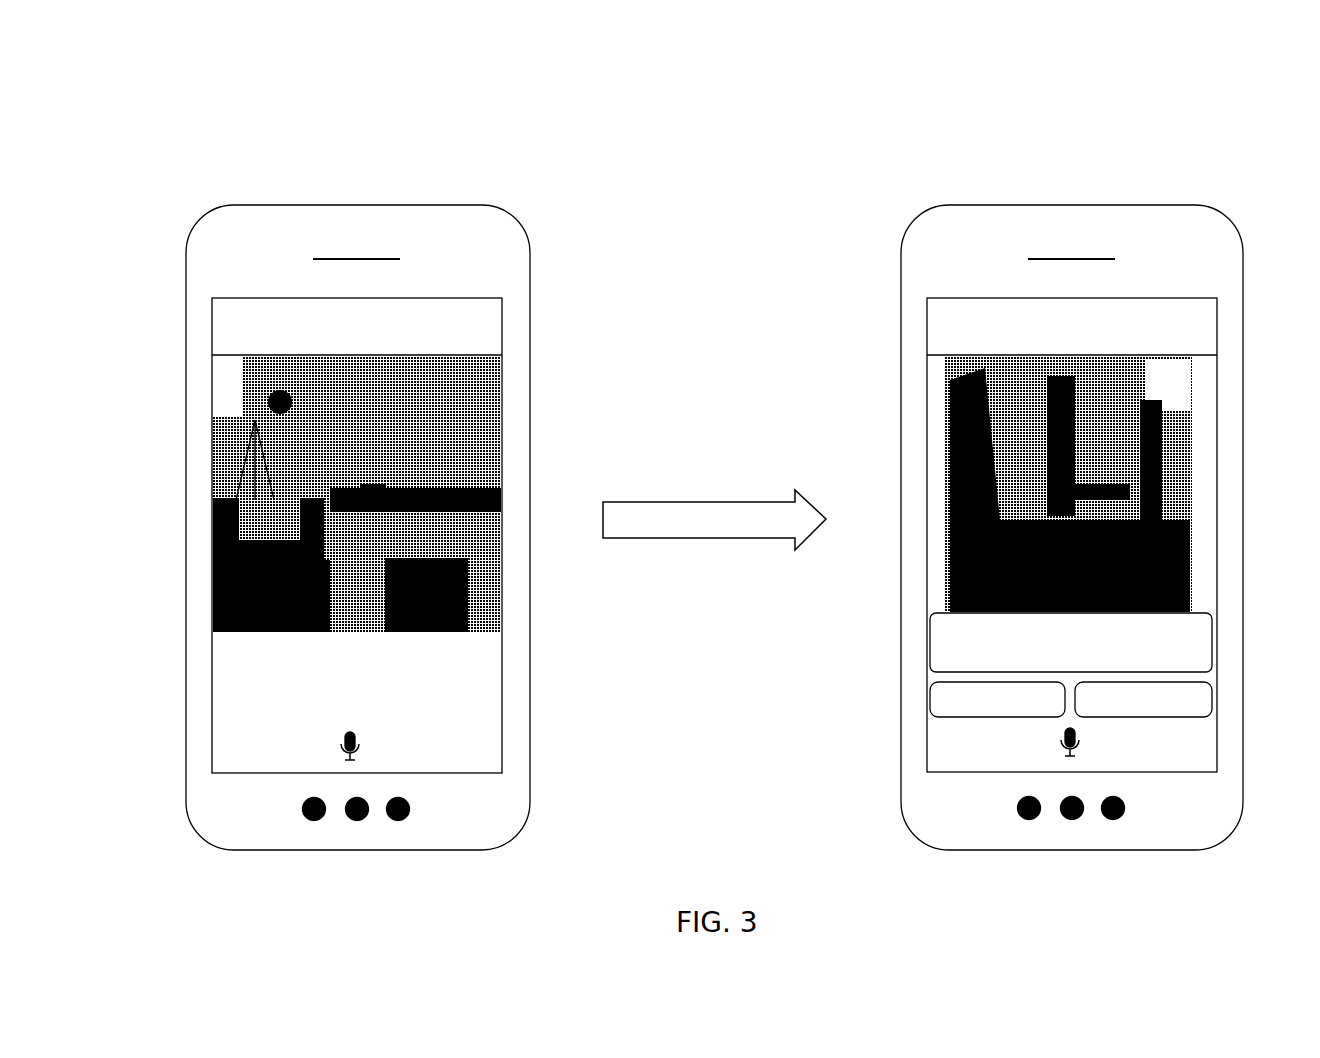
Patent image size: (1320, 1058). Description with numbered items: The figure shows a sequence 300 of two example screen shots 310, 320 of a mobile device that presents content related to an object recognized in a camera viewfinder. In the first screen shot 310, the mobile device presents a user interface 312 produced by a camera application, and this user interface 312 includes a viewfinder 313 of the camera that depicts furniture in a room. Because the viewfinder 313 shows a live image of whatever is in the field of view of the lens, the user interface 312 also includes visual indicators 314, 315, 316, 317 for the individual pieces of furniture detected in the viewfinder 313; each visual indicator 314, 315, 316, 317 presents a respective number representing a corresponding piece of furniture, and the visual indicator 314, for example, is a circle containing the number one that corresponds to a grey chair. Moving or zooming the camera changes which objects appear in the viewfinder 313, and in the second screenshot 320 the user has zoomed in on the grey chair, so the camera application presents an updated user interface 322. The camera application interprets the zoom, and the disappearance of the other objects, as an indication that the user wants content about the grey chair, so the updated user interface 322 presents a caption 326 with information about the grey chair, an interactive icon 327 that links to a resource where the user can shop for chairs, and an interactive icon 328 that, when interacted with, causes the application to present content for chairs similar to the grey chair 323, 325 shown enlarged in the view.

The user interface transition 300 is at (122, 74).
The first screen shot 310 is at (190, 197).
The user interface 312 is at (225, 335).
The viewfinder 313 is at (224, 445).
The visual indicator 314 is at (213, 497).
The visual indicator 315 is at (302, 399).
The visual indicator 316 is at (389, 479).
The visual indicator 317 is at (419, 591).
The screenshot 320 is at (891, 209).
The updated user interface 322 is at (935, 325).
The chair seat 323 is at (935, 464).
The chair back 325 is at (950, 419).
The caption 326 is at (923, 647).
The interactive icon 327 is at (928, 718).
The interactive icon 328 is at (1214, 715).